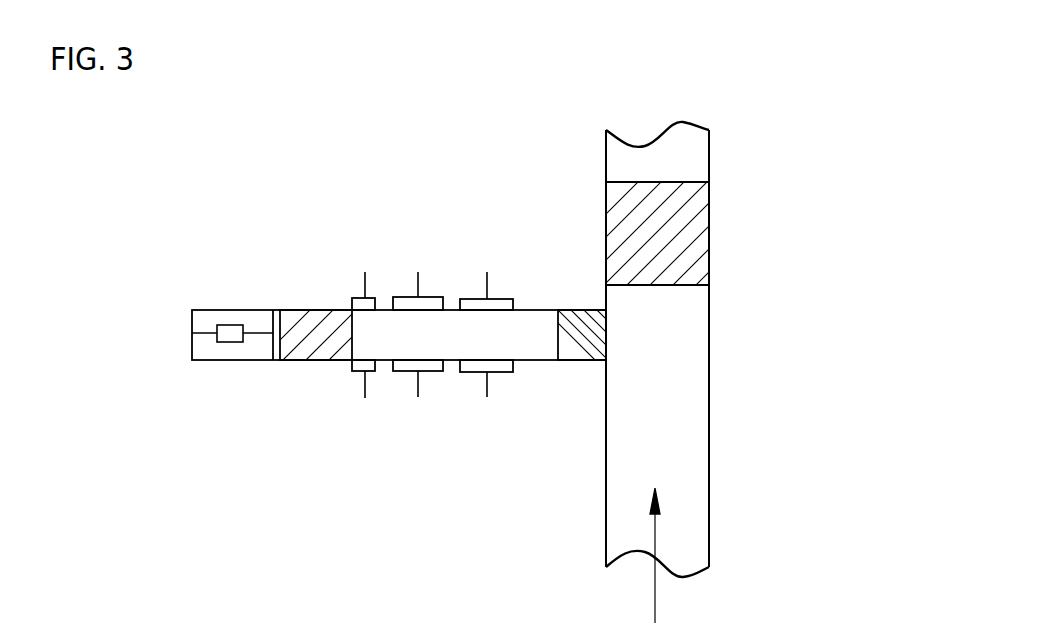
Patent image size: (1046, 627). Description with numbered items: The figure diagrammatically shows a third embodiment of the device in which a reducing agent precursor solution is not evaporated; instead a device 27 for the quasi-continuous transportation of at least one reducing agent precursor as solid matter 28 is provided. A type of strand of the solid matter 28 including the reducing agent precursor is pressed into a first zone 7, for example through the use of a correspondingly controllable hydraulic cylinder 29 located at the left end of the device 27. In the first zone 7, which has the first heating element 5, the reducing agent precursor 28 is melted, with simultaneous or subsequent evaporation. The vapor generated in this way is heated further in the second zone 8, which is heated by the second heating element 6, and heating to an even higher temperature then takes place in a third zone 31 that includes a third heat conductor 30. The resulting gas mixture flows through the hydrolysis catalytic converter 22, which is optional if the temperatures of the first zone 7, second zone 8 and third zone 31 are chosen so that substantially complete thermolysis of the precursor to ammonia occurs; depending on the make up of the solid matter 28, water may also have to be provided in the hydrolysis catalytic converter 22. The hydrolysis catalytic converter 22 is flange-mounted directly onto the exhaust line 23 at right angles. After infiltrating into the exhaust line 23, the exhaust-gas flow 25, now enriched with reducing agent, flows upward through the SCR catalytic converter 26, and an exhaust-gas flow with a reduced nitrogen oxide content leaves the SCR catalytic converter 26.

The first heating element 5 is at (360, 298).
The second heating element 6 is at (433, 297).
The first zone 7 is at (377, 295).
The second zone 8 is at (398, 382).
The hydrolysis catalytic converter 22 is at (596, 310).
The exhaust line 23 is at (709, 393).
The exhaust-gas flow 25 is at (655, 614).
The SCR catalytic converter 26 is at (709, 214).
The device for quasi-continuous transportation of reducing agent precursor 27 is at (298, 286).
The solid matter reducing agent precursor 28 is at (310, 360).
The hydraulic cylinder 29 is at (230, 342).
The third heat conductor 30 is at (500, 298).
The third zone 31 is at (507, 382).